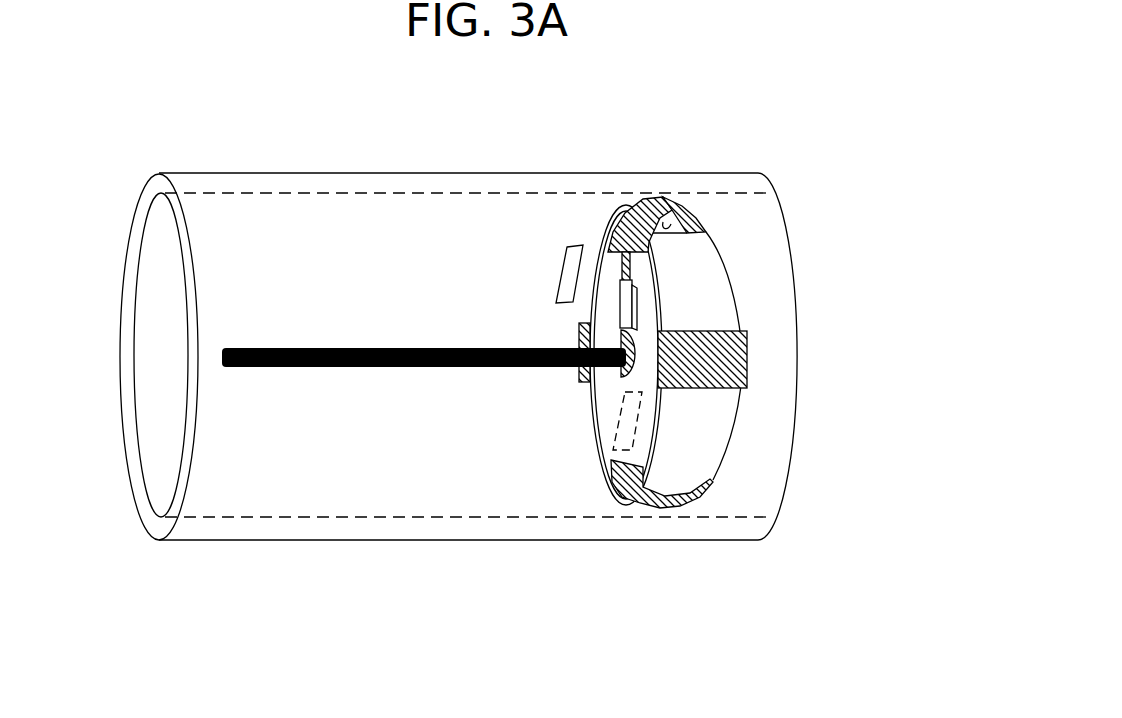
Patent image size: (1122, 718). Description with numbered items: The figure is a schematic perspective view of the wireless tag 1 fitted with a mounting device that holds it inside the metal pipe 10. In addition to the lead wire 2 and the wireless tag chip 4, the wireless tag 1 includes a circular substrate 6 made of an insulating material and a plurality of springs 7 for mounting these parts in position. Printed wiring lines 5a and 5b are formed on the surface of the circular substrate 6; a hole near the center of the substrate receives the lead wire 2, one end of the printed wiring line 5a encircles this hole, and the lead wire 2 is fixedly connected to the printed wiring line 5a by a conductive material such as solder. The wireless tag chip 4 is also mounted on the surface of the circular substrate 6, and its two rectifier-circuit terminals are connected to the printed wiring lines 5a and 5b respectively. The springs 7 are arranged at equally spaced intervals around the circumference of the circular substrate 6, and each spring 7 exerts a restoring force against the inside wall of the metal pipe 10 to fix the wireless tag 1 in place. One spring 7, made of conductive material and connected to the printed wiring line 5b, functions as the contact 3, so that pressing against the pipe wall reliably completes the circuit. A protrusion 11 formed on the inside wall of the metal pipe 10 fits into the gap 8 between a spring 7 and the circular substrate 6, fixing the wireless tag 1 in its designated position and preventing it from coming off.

The wireless tag 1 is at (826, 576).
The lead wire 2 is at (345, 367).
The contact 3 is at (713, 172).
The wireless tag chip 4 is at (620, 283).
The printed wiring line 5a is at (633, 333).
The printed wiring line 5b is at (622, 280).
The circular substrate 6 is at (717, 425).
The spring 7 is at (702, 226).
The gap 8 is at (673, 212).
The metal pipe 10 is at (740, 527).
The protrusion 11 is at (574, 248).